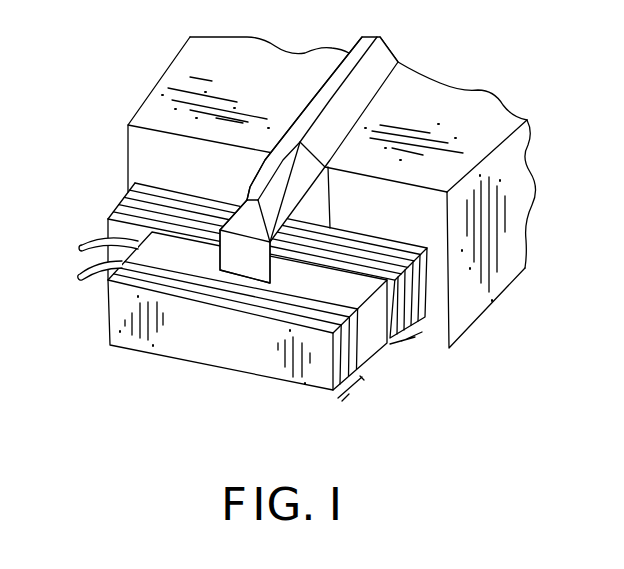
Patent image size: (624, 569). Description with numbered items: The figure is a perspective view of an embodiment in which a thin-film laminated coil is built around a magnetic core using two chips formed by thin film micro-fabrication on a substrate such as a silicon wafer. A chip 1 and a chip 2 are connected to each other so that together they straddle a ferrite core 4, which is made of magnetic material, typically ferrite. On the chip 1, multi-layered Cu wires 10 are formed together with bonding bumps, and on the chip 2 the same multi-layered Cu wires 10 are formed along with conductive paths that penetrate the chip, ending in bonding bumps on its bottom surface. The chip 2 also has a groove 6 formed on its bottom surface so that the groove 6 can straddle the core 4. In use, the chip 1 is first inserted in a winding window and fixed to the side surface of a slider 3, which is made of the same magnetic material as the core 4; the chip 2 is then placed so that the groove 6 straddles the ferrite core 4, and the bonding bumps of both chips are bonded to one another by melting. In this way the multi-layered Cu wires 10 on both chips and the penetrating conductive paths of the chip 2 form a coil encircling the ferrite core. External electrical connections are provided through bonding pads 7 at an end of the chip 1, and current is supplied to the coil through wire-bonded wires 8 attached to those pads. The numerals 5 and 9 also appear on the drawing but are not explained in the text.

The chip 1 is at (428, 278).
The chip 2 is at (378, 358).
The slider 3 is at (534, 176).
The ferrite core 4 is at (275, 262).
The right rear laminated block 5 is at (322, 212).
The groove 6 is at (213, 262).
The bonding pads 7 is at (107, 226).
The wire-bonded wires 8 is at (77, 247).
The ridge portion 9 is at (298, 140).
The multi-layered Cu wires 10 is at (345, 396).